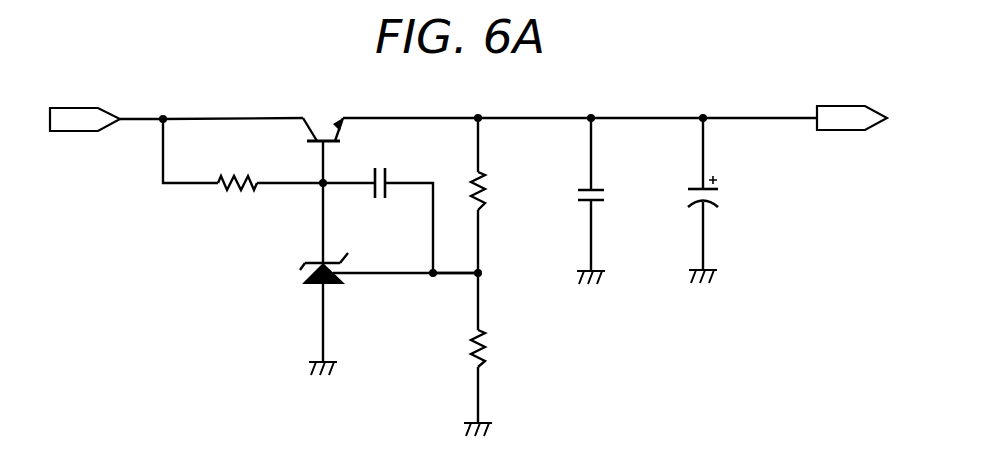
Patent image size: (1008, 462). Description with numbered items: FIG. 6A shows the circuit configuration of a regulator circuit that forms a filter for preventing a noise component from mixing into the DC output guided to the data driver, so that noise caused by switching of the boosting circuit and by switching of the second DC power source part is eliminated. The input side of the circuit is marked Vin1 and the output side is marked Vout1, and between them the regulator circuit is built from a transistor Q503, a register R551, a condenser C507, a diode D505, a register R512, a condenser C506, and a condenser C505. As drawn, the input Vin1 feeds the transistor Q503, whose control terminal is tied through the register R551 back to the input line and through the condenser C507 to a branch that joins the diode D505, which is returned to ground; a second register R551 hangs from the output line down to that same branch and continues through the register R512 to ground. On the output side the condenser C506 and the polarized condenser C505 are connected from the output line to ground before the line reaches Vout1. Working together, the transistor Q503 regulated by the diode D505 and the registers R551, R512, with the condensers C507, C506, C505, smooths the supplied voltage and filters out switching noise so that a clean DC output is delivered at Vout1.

The transistor Q503 is at (317, 118).
The register R551 is at (233, 190).
The condenser C507 is at (401, 153).
The diode D505 is at (300, 266).
The register R512 is at (483, 342).
The condenser C506 is at (604, 198).
The condenser C505 is at (719, 198).
The input voltage terminal Vin1 is at (85, 104).
The output voltage terminal Vout1 is at (852, 102).